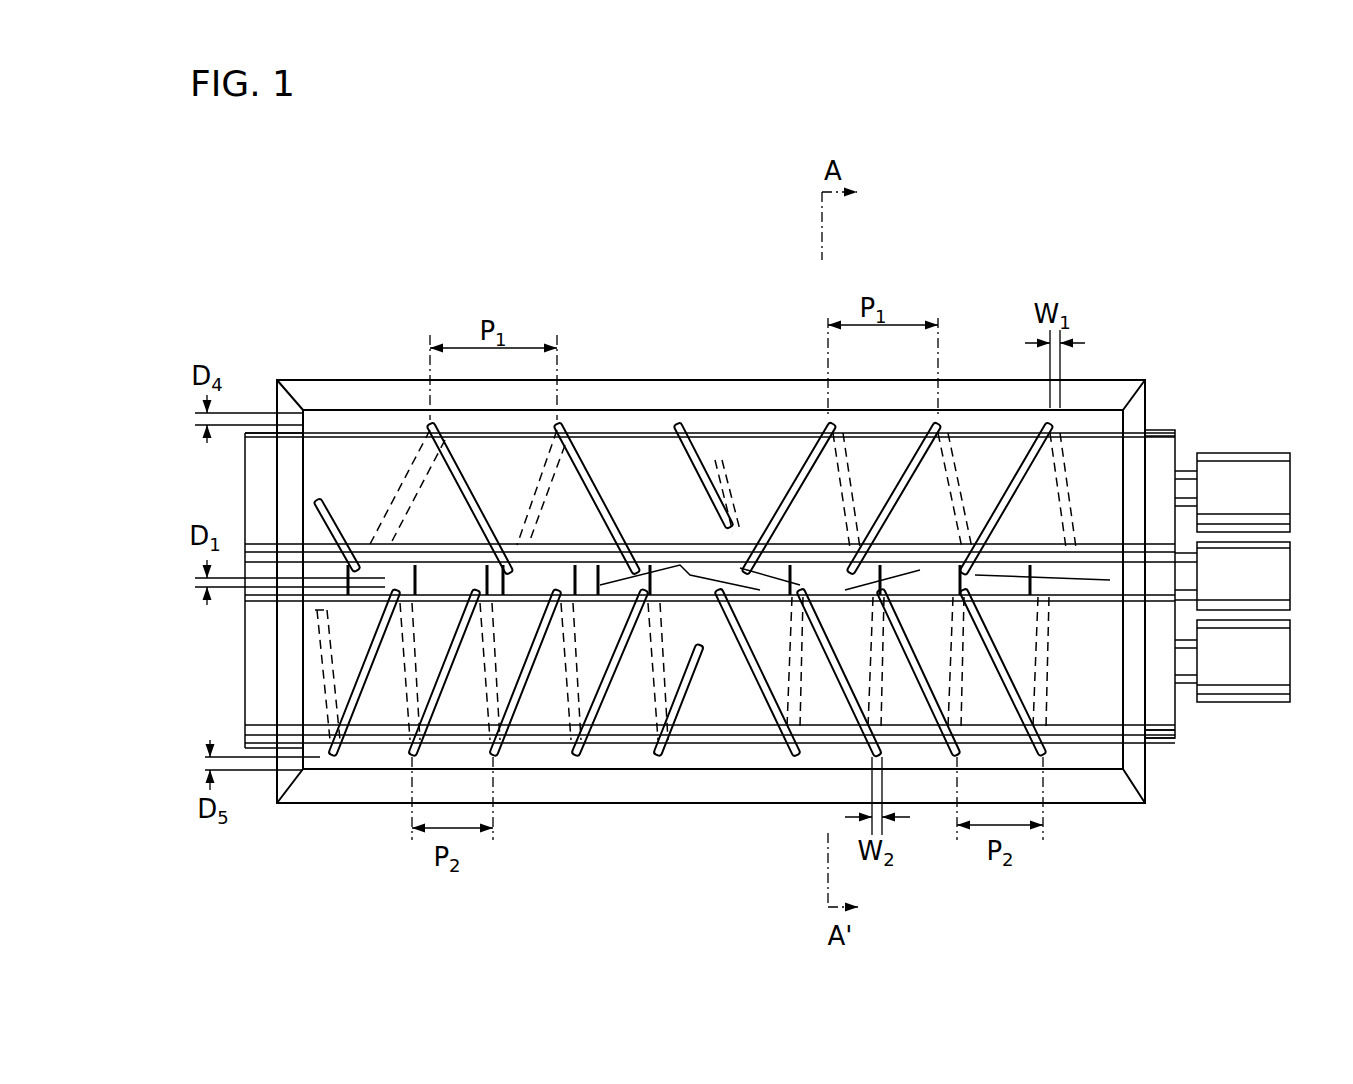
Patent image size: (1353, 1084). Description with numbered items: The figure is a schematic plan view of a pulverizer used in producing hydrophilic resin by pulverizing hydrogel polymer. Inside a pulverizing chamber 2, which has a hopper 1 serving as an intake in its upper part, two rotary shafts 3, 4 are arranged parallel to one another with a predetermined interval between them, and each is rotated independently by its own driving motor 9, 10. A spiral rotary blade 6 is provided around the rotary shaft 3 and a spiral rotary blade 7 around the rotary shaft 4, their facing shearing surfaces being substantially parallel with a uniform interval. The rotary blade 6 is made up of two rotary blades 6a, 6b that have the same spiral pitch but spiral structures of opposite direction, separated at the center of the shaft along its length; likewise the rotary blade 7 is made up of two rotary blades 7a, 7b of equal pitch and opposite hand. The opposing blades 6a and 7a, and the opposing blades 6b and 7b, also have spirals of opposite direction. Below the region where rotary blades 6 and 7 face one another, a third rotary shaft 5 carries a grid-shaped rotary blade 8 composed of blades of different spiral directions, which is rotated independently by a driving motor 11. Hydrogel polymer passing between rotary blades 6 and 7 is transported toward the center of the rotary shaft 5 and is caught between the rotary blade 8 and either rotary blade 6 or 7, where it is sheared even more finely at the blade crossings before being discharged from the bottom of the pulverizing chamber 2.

The hopper 1 is at (1122, 378).
The pulverizing chamber 2 is at (968, 409).
The rotary shaft 3 is at (1160, 440).
The rotary shaft 4 is at (1175, 742).
The rotary shaft 5 is at (1165, 572).
The rotary blade 6 is at (722, 428).
The rotary blade 6a is at (578, 424).
The rotary blade 6b is at (908, 455).
The rotary blade 7 is at (682, 754).
The rotary blade 7a is at (602, 742).
The rotary blade 7b is at (881, 727).
The rotary blade 8 is at (318, 560).
The driving motor 9 is at (1255, 467).
The driving motor 10 is at (1270, 690).
The driving motor 11 is at (1275, 592).